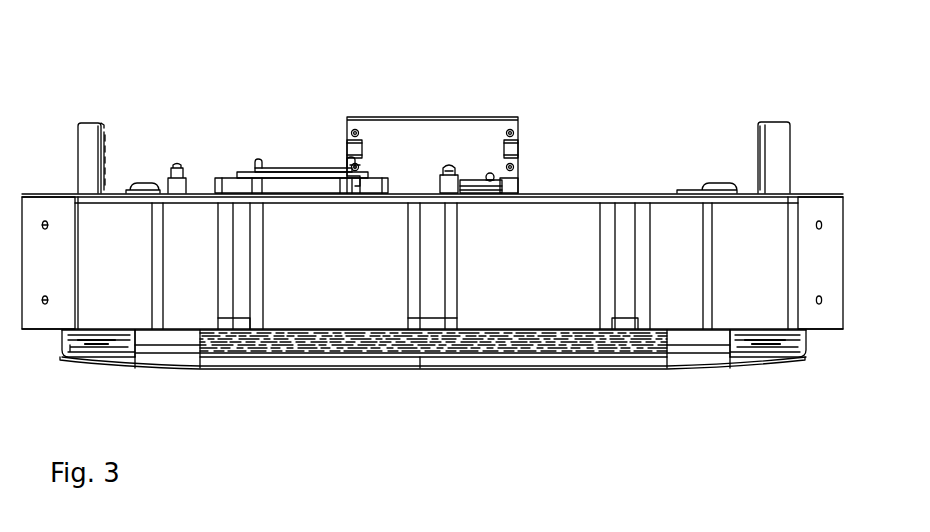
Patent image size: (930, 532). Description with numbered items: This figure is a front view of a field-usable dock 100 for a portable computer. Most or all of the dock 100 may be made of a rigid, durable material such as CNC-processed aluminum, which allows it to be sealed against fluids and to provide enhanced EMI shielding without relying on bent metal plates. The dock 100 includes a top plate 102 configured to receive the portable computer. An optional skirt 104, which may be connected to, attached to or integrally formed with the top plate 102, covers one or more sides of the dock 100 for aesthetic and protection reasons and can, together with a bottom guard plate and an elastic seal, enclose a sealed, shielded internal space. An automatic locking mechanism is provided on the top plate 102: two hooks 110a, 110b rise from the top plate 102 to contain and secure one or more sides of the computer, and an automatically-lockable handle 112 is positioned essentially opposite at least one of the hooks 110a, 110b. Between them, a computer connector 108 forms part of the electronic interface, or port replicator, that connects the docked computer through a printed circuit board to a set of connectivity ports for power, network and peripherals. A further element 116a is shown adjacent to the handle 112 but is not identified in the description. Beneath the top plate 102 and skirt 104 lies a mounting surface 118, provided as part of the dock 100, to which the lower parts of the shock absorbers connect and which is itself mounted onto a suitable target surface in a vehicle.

The dock 100 is at (610, 30).
The top plate 102 is at (609, 193).
The skirt 104 is at (340, 302).
The computer connector 108 is at (312, 130).
The hook 110a is at (768, 106).
The hook 110b is at (106, 110).
The automatically-lockable handle 112 is at (418, 101).
The clamp 116a is at (447, 178).
The mounting surface 118 is at (493, 358).